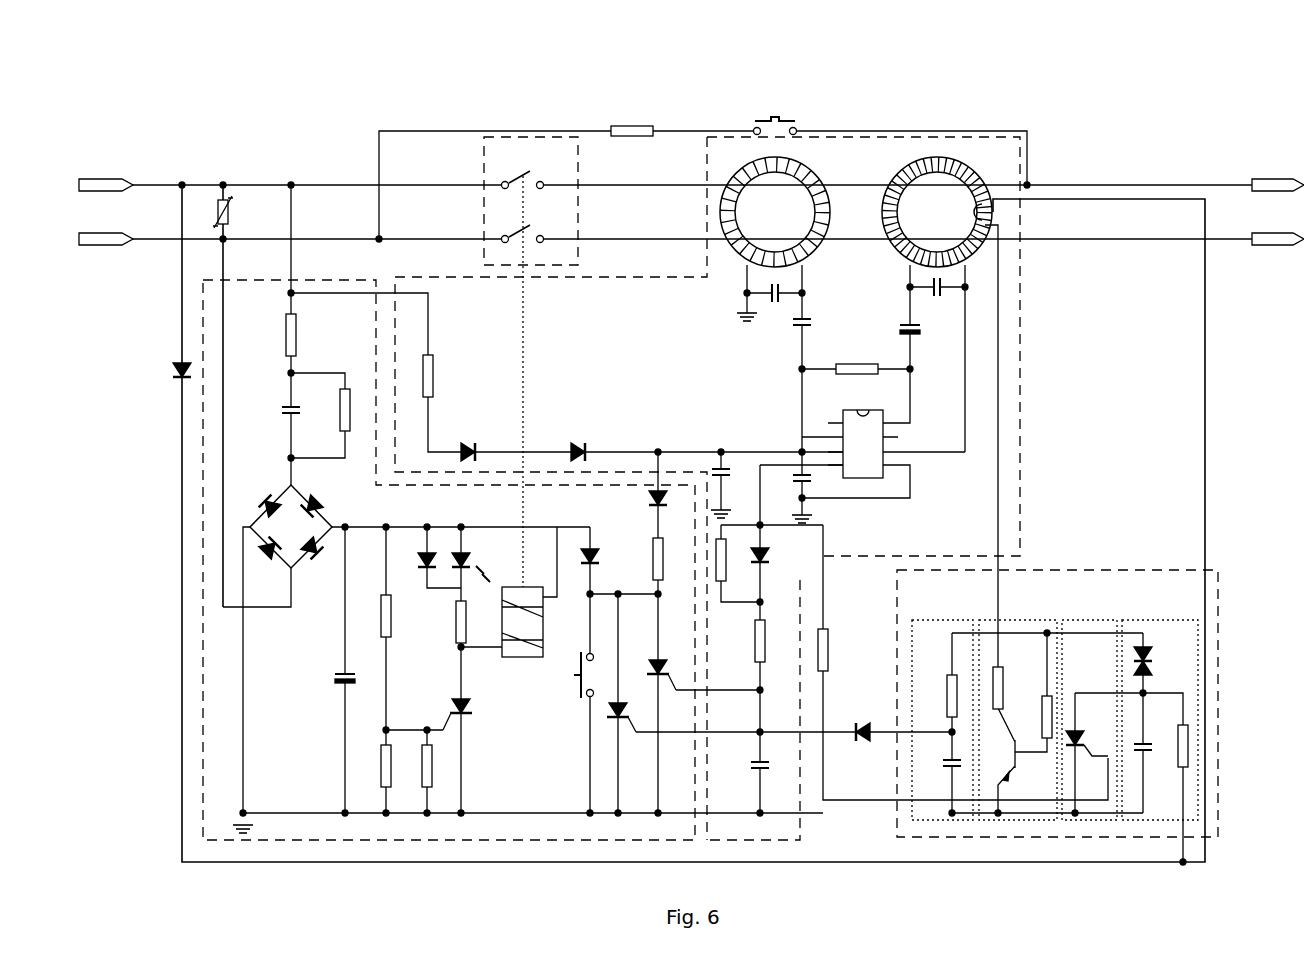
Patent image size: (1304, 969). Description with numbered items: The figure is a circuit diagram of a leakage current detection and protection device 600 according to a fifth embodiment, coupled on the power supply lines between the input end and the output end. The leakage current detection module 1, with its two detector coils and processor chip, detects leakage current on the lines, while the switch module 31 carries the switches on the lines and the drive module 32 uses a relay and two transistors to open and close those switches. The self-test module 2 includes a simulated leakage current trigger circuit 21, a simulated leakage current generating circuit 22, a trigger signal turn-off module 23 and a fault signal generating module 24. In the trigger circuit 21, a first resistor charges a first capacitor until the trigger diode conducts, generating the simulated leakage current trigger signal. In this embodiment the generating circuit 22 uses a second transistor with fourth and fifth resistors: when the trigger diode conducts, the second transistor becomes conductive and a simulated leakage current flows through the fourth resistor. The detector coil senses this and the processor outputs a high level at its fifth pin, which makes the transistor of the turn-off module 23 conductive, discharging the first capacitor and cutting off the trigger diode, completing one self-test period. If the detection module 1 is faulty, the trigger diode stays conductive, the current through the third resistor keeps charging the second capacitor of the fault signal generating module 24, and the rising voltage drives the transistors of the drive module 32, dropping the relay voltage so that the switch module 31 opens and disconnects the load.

The leakage current detection and protection device 600 is at (1290, 40).
The leakage current detection module 1 is at (1005, 137).
The self-test module 2 is at (1152, 570).
The simulated leakage current trigger circuit 21 is at (1160, 620).
The simulated leakage current generating circuit 22 is at (1012, 620).
The trigger signal turn-off module 23 is at (1087, 620).
The fault signal generating module 24 is at (940, 620).
The switch module 31 is at (525, 135).
The drive module 32 is at (203, 578).